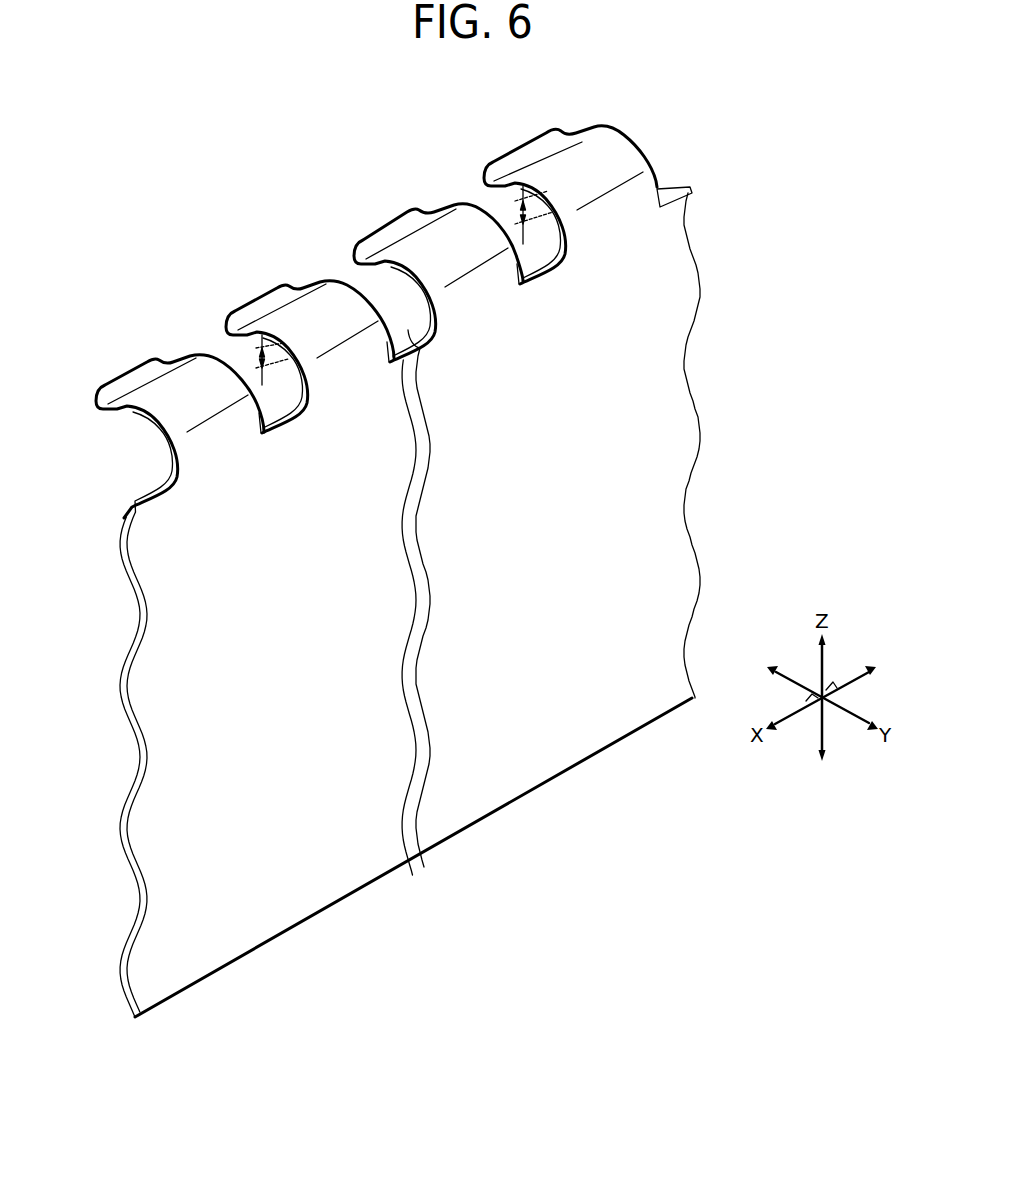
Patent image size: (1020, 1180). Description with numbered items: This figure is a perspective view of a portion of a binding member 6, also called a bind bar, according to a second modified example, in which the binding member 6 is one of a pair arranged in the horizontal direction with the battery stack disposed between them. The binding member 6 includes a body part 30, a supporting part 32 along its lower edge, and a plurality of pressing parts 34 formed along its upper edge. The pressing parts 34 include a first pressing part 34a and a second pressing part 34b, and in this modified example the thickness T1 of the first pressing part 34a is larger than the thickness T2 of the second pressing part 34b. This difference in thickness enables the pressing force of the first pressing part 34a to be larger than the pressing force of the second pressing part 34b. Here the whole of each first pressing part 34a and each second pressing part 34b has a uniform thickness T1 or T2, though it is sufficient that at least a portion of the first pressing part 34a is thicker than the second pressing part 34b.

The body part 30 is at (666, 529).
The supporting part 32 is at (648, 715).
The pressing part 34 is at (355, 292).
The first pressing part 34a is at (392, 215).
The second pressing part 34b is at (129, 371).
The thickness of first pressing part T1 is at (513, 220).
The thickness of second pressing part T2 is at (258, 368).
The binding member 6 is at (553, 970).